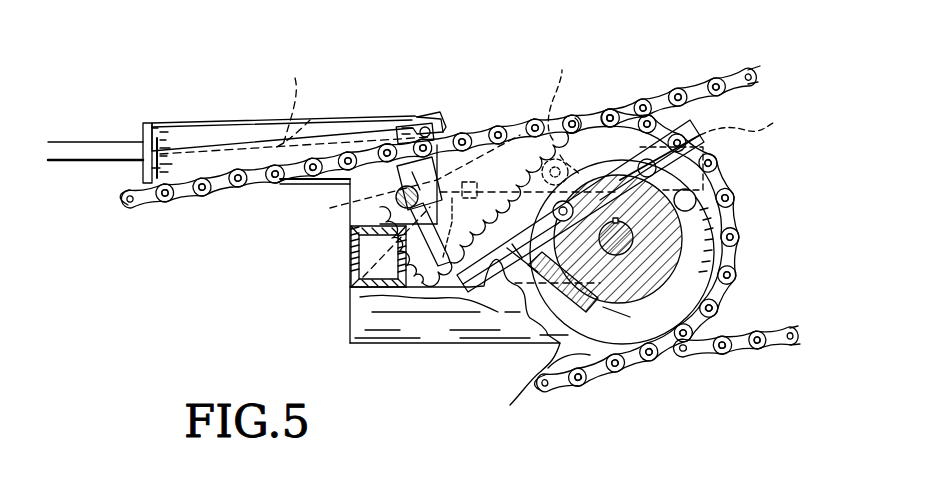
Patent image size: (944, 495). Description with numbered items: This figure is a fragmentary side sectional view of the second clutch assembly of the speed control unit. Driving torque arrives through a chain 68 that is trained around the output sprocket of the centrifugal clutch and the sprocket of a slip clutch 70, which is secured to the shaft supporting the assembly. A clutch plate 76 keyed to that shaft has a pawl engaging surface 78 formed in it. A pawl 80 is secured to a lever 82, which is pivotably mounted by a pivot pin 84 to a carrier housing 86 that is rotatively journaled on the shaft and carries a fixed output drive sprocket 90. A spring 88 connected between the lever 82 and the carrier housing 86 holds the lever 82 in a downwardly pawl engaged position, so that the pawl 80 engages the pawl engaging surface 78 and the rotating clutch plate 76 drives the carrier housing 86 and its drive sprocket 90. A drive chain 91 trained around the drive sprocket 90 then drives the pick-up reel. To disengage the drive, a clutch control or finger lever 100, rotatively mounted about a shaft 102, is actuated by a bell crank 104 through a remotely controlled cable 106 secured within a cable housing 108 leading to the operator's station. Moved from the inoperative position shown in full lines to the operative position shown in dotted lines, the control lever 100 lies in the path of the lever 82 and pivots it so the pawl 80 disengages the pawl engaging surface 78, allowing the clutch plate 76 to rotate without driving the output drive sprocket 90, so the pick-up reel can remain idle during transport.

The chain 68 is at (700, 80).
The slip clutch 70 is at (700, 255).
The clutch plate 76 is at (685, 235).
The pawl engaging surface 78 is at (580, 185).
The pawl 80 is at (575, 147).
The lever 82 is at (700, 135).
The pivot pin 84 is at (647, 159).
The carrier housing 86 is at (548, 356).
The spring 88 is at (512, 300).
The output drive sprocket 90 is at (680, 315).
The drive chain 91 is at (212, 193).
The control lever 100 is at (356, 283).
The shaft 102 is at (352, 238).
The bell crank 104 is at (362, 206).
The cable 106 is at (270, 140).
The cable housing 108 is at (108, 147).